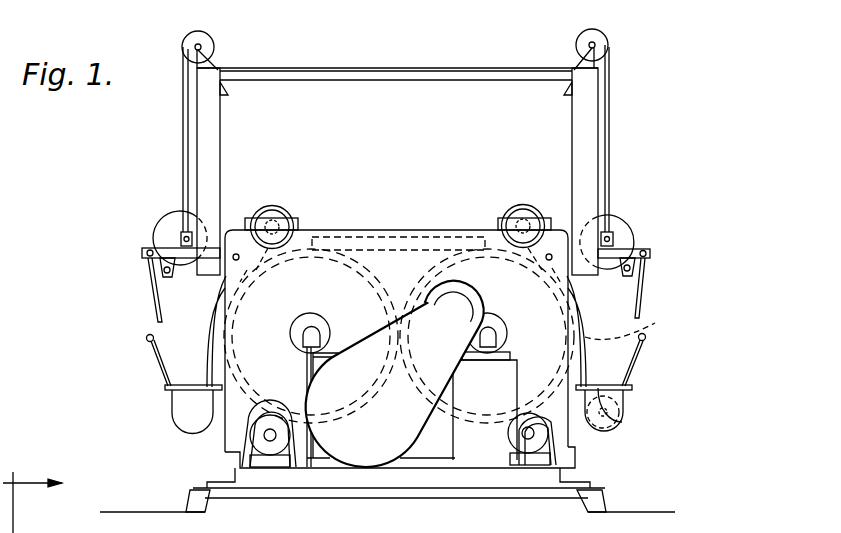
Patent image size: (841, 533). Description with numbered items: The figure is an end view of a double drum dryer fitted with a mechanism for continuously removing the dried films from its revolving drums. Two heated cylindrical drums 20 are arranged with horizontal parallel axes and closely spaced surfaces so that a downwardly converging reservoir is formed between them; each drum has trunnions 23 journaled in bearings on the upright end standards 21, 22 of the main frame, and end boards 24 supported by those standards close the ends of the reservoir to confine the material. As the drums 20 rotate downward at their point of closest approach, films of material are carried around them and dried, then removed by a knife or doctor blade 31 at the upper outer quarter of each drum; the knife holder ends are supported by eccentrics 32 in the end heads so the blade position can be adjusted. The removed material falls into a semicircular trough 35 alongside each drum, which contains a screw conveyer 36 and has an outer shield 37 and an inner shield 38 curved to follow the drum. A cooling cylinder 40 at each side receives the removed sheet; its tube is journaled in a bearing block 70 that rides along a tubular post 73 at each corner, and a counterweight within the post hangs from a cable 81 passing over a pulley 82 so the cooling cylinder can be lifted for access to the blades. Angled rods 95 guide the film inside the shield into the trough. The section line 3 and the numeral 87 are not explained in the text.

The section line 3 is at (32, 492).
The cylindrical drum 20 is at (372, 397).
The upright end standard 21 is at (353, 230).
The upright end standard 22 is at (399, 433).
The trunnion 23 is at (305, 318).
The end board 24 is at (368, 279).
The knife or doctor blade 31 is at (270, 252).
The eccentric 32 is at (284, 200).
The trough 35 is at (172, 404).
The screw conveyer 36 is at (620, 408).
The outer shield or panel 37 is at (152, 345).
The inner shield or panel 38 is at (634, 329).
The cooling cylinder 40 is at (402, 233).
The bearing block 70 is at (178, 233).
The post 73 is at (221, 165).
The cable 81 is at (183, 122).
The pulley 82 is at (215, 46).
The cable 87 is at (95, 531).
The rod 95 is at (155, 291).